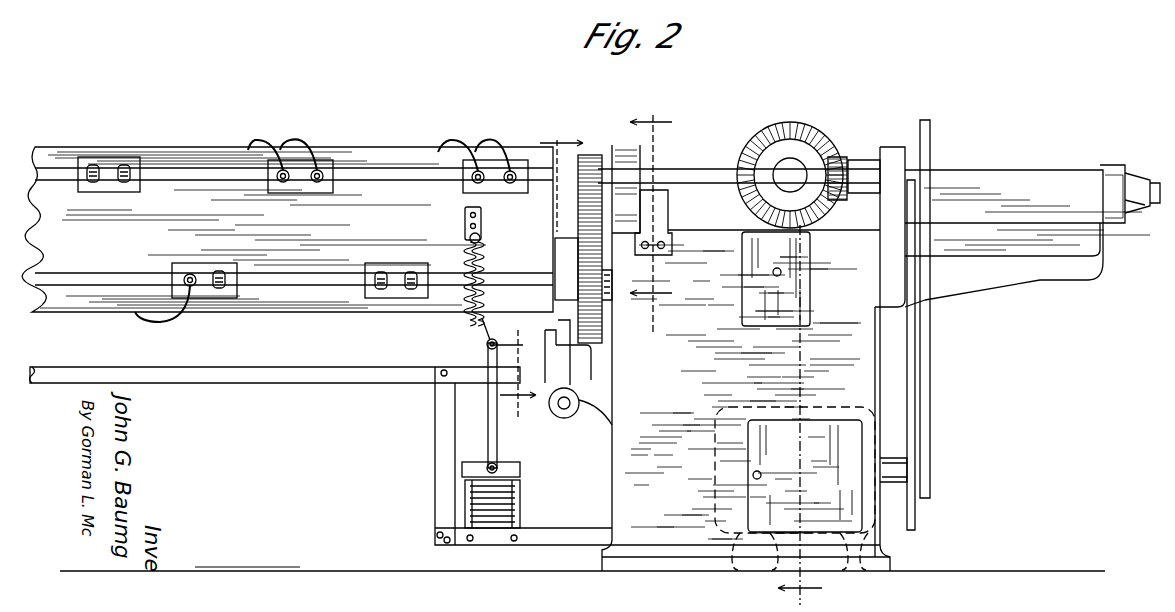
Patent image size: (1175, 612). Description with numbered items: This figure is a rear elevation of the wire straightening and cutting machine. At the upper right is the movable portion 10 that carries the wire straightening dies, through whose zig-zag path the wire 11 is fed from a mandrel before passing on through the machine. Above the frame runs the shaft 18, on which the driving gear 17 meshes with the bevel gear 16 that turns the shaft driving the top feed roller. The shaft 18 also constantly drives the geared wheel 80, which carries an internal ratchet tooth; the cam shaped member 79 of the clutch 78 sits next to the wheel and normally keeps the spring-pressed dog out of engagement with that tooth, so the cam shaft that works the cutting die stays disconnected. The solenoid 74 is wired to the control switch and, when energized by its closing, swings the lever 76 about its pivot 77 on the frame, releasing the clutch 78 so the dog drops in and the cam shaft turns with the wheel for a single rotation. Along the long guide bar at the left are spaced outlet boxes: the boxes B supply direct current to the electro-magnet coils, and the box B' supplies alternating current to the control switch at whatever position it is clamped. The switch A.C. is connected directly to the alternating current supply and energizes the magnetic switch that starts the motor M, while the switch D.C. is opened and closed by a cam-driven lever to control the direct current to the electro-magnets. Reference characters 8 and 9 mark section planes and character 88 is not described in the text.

The section line 8-8 / hanger bracket 8 is at (651, 214).
The section line 9- 9 is at (812, 240).
The movable portion 10 is at (1062, 140).
The wire 11 is at (1163, 178).
The bevel gear 16 is at (800, 150).
The driving gear 17 is at (842, 163).
The shaft 18 is at (690, 176).
The solenoid 74 is at (536, 506).
The lever 76 is at (498, 437).
The pivot 77 is at (566, 408).
The clutch 78 is at (560, 364).
The cam shaped member 79 is at (572, 342).
The geared wheel 80 is at (603, 326).
The spring 88 is at (486, 268).
The outlet box B is at (287, 213).
The outlet box B' is at (204, 279).
The switch A.C. is at (800, 360).
The switch D.C. is at (805, 476).
The motor M is at (742, 410).